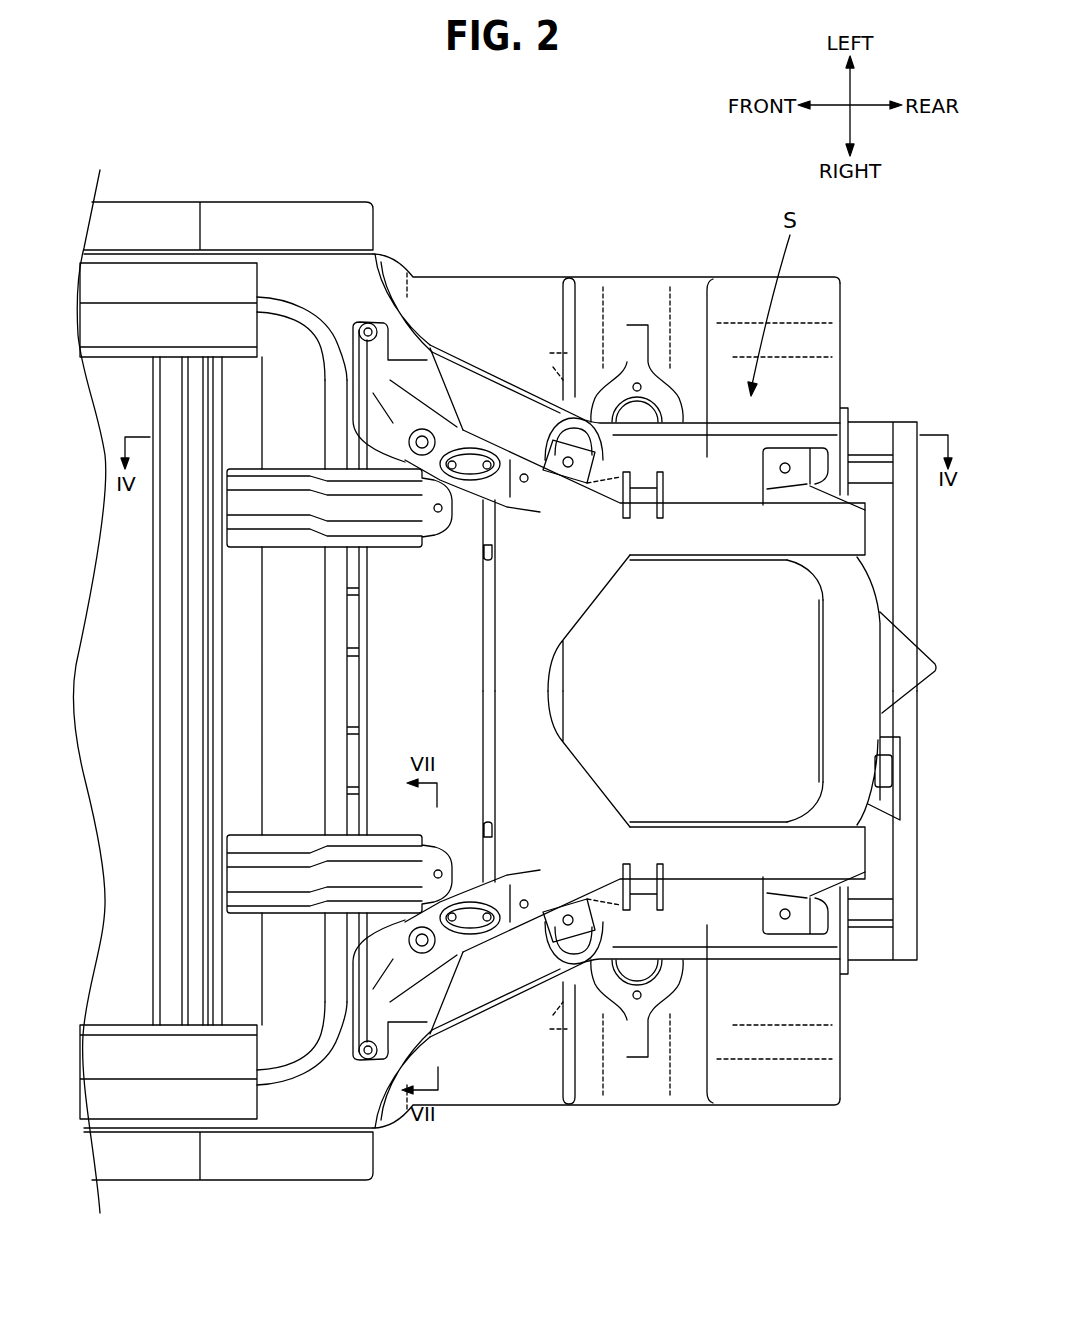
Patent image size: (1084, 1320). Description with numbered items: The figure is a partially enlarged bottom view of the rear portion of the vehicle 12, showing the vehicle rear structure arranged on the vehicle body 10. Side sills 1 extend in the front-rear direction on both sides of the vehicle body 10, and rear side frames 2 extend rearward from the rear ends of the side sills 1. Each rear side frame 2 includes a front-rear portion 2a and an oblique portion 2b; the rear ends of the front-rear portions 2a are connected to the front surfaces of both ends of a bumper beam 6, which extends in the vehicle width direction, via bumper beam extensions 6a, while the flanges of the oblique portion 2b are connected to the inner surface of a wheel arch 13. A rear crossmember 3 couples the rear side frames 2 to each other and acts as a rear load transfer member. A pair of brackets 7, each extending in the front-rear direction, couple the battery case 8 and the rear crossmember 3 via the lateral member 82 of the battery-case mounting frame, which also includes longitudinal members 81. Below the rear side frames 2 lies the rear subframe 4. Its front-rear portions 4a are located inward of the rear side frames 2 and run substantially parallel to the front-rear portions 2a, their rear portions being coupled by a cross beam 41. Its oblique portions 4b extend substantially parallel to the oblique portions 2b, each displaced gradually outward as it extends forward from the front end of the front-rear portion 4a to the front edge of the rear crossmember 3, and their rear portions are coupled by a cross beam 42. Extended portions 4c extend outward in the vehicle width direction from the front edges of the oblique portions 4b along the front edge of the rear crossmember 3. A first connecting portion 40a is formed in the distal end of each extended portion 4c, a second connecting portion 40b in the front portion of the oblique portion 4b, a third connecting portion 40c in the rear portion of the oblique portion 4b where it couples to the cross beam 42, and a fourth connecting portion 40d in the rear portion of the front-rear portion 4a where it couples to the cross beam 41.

The side sill 1 is at (173, 212).
The rear side frame 2 is at (606, 690).
The front-rear portion 2a is at (708, 926).
The oblique portion 2b is at (487, 989).
The rear crossmember 3 is at (405, 683).
The rear subframe 4 is at (672, 554).
The front-rear portion 4a is at (792, 535).
The oblique portion 4b is at (493, 490).
The extended portion 4c is at (367, 378).
The bumper beam 6 is at (920, 582).
The bumper beam extension 6a is at (872, 421).
The bracket 7 is at (394, 533).
The battery case 8 is at (127, 937).
The vehicle body 10 is at (470, 1122).
The vehicle 12 is at (338, 202).
The wheel arch 13 is at (390, 263).
The first connecting portion 40a is at (353, 327).
The second connecting portion 40b is at (430, 343).
The third connecting portion 40c is at (569, 460).
The fourth connecting portion 40d is at (785, 462).
The cross beam 41 is at (840, 687).
The cross beam 42 is at (528, 686).
The longitudinal member 81 is at (95, 280).
The lateral member 82 is at (170, 678).